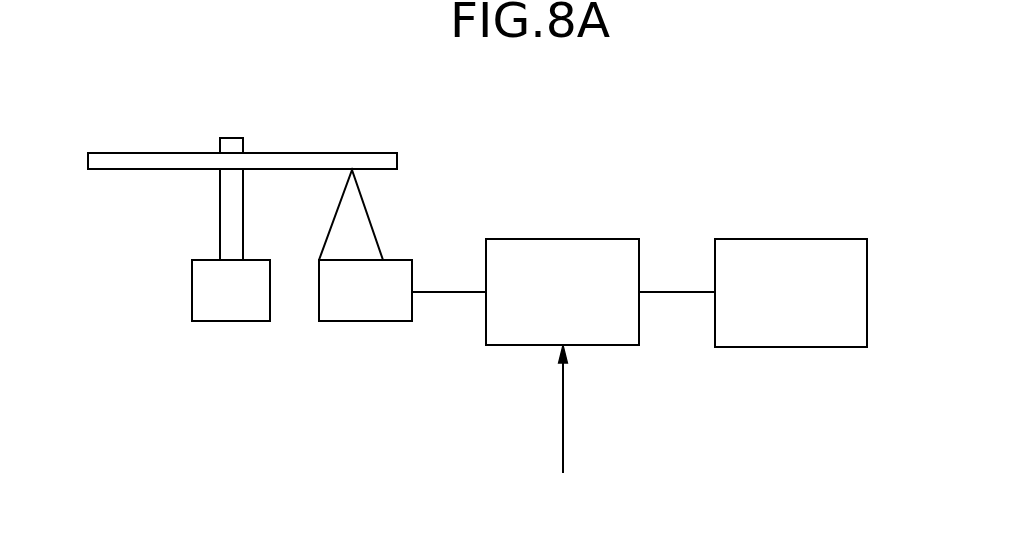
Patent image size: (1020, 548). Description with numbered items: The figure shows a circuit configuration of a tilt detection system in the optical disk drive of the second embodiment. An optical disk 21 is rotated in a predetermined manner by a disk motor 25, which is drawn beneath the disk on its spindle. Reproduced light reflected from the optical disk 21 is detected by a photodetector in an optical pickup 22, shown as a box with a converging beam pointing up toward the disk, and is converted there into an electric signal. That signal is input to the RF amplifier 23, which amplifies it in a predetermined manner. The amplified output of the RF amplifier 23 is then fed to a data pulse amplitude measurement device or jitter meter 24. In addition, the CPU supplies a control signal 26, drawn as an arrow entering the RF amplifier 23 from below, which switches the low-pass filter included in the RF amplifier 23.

The optical disk 21 is at (282, 153).
The optical pickup 22 is at (412, 260).
The RF amplifier 23 is at (578, 239).
The data pulse amplitude measurement device or jitter meter 24 is at (848, 238).
The disk motor 25 is at (243, 321).
The control signal 26 is at (564, 408).